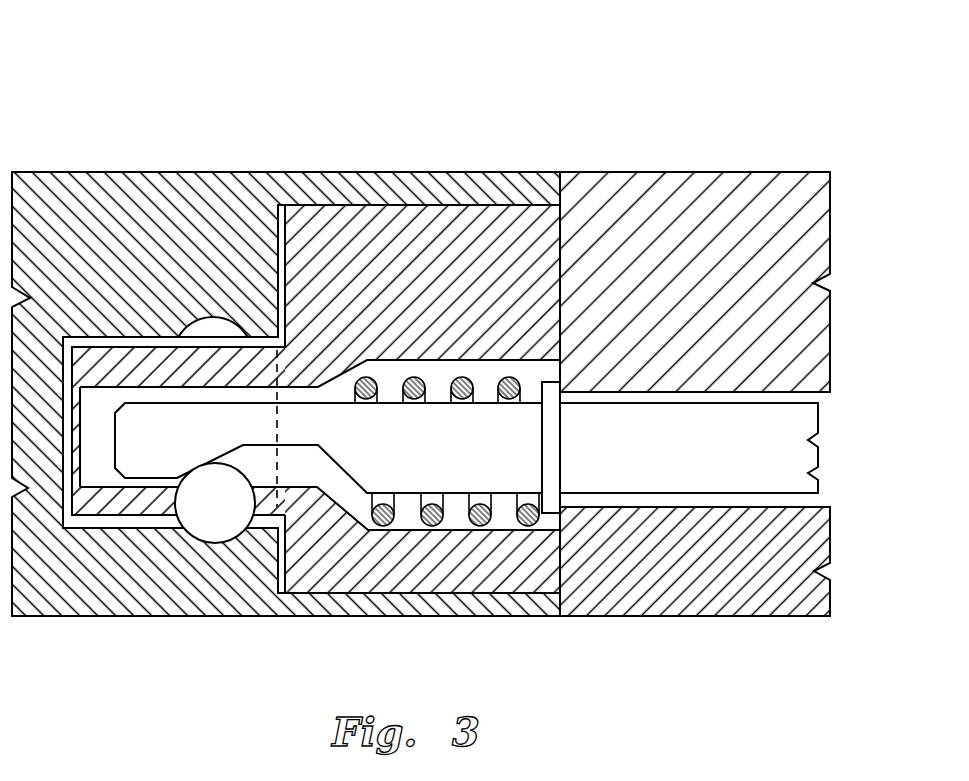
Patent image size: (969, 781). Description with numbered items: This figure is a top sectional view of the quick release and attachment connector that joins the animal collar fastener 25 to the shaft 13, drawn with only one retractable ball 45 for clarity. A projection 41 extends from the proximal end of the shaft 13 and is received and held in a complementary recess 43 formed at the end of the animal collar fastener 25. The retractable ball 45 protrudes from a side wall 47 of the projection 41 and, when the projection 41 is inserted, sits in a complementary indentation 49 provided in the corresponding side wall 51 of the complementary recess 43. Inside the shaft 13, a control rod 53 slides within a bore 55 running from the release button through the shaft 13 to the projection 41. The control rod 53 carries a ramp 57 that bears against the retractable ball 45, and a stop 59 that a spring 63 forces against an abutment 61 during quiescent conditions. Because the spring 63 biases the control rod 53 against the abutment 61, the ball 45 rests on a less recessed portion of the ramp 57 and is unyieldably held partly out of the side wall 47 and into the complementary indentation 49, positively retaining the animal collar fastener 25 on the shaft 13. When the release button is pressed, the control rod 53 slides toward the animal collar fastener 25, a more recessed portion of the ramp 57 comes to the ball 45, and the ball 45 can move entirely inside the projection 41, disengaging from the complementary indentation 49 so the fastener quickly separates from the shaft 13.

The shaft 13 is at (650, 172).
The animal collar fastener 25 is at (107, 142).
The projection 41 is at (167, 368).
The complementary recess 43 is at (128, 343).
The retractable ball 45 is at (215, 505).
The side wall 47 is at (95, 522).
The complementary indentation 49 is at (230, 320).
The side wall 51 is at (145, 528).
The control rod 53 is at (727, 463).
The bore 55 is at (830, 393).
The ramp 57 is at (268, 490).
The stop 59 is at (552, 385).
The abutment 61 is at (563, 522).
The spring 63 is at (478, 524).